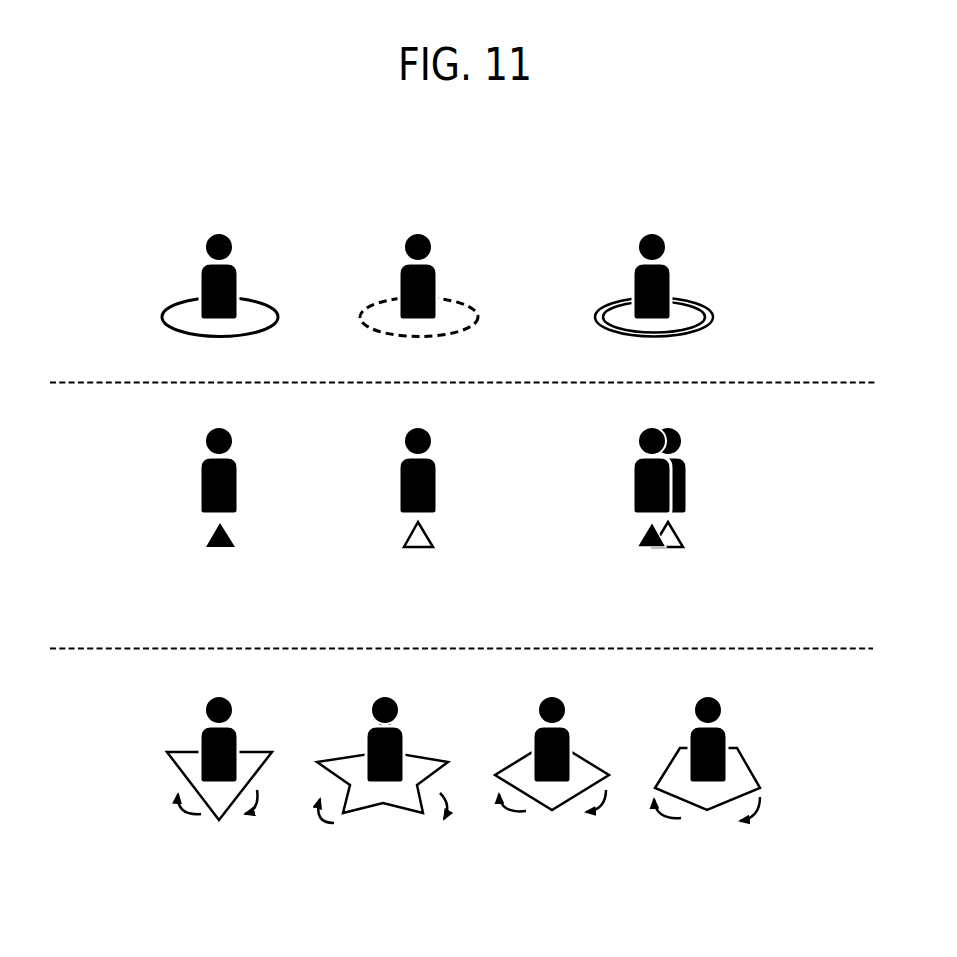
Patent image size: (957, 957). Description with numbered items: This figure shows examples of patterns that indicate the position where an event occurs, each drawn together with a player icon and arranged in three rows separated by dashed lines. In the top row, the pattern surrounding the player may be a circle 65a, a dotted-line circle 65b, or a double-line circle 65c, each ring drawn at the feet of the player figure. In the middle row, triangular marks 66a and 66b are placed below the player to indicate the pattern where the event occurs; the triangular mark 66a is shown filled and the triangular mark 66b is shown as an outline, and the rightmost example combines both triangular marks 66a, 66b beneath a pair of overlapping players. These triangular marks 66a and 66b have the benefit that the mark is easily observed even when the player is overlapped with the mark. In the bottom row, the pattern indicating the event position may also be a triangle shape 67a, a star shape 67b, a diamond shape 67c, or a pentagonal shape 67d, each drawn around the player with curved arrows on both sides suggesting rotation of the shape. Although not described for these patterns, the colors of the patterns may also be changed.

The circle 65a is at (256, 300).
The dotted-line circle 65b is at (455, 300).
The double-line circle 65c is at (688, 300).
The triangular mark 66a is at (230, 535).
The triangular mark 66b is at (430, 535).
The triangle shape 67a is at (262, 748).
The star shape 67b is at (427, 758).
The diamond shape 67c is at (587, 758).
The pentagonal shape 67d is at (747, 750).